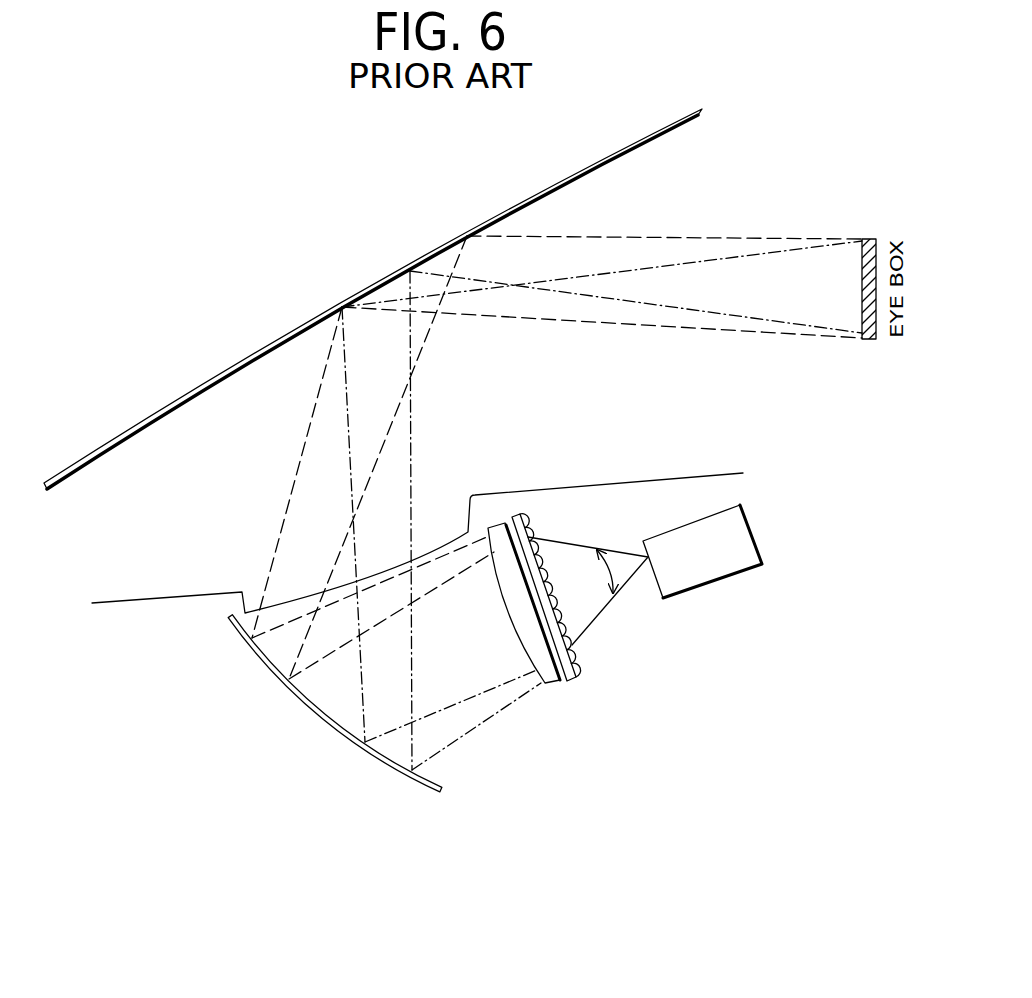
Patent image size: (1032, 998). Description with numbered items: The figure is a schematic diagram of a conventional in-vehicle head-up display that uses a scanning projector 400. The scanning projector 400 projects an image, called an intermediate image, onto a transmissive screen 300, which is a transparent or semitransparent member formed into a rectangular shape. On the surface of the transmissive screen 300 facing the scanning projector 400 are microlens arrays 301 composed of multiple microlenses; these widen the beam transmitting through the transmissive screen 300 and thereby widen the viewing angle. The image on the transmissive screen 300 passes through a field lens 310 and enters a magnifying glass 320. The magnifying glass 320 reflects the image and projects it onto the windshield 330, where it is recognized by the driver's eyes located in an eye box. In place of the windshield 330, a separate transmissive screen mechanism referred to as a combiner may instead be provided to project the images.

The windshield 330 is at (197, 389).
The magnifying glass 320 is at (422, 790).
The field lens 310 is at (559, 683).
The transmissive screen 300 is at (591, 597).
The microlens arrays 301 is at (566, 622).
The scanning projector 400 is at (758, 538).